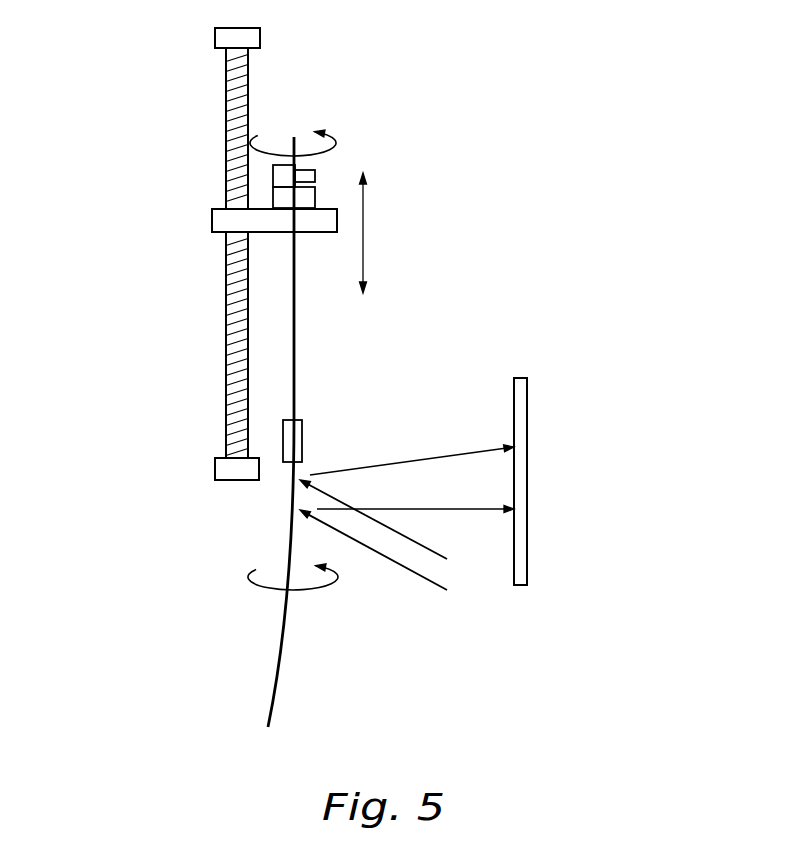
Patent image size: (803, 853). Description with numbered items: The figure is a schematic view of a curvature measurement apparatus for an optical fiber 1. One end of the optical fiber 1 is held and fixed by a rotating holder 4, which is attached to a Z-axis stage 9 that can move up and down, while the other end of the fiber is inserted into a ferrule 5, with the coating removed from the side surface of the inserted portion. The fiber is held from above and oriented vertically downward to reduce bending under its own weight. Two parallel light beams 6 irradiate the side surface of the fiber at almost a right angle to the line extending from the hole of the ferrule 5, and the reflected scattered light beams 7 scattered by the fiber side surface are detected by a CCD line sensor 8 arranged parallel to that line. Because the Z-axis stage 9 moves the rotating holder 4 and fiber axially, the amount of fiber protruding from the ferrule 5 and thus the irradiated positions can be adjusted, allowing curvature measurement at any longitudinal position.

The optical fiber 1 is at (278, 673).
The rotating holder 4 is at (285, 172).
The ferrule 5 is at (300, 418).
The light beams 6 is at (417, 578).
The Reflected Scattered Light Beams 7 is at (432, 458).
The CCD line sensor 8 is at (527, 420).
The Z-axis stage 9 is at (213, 233).